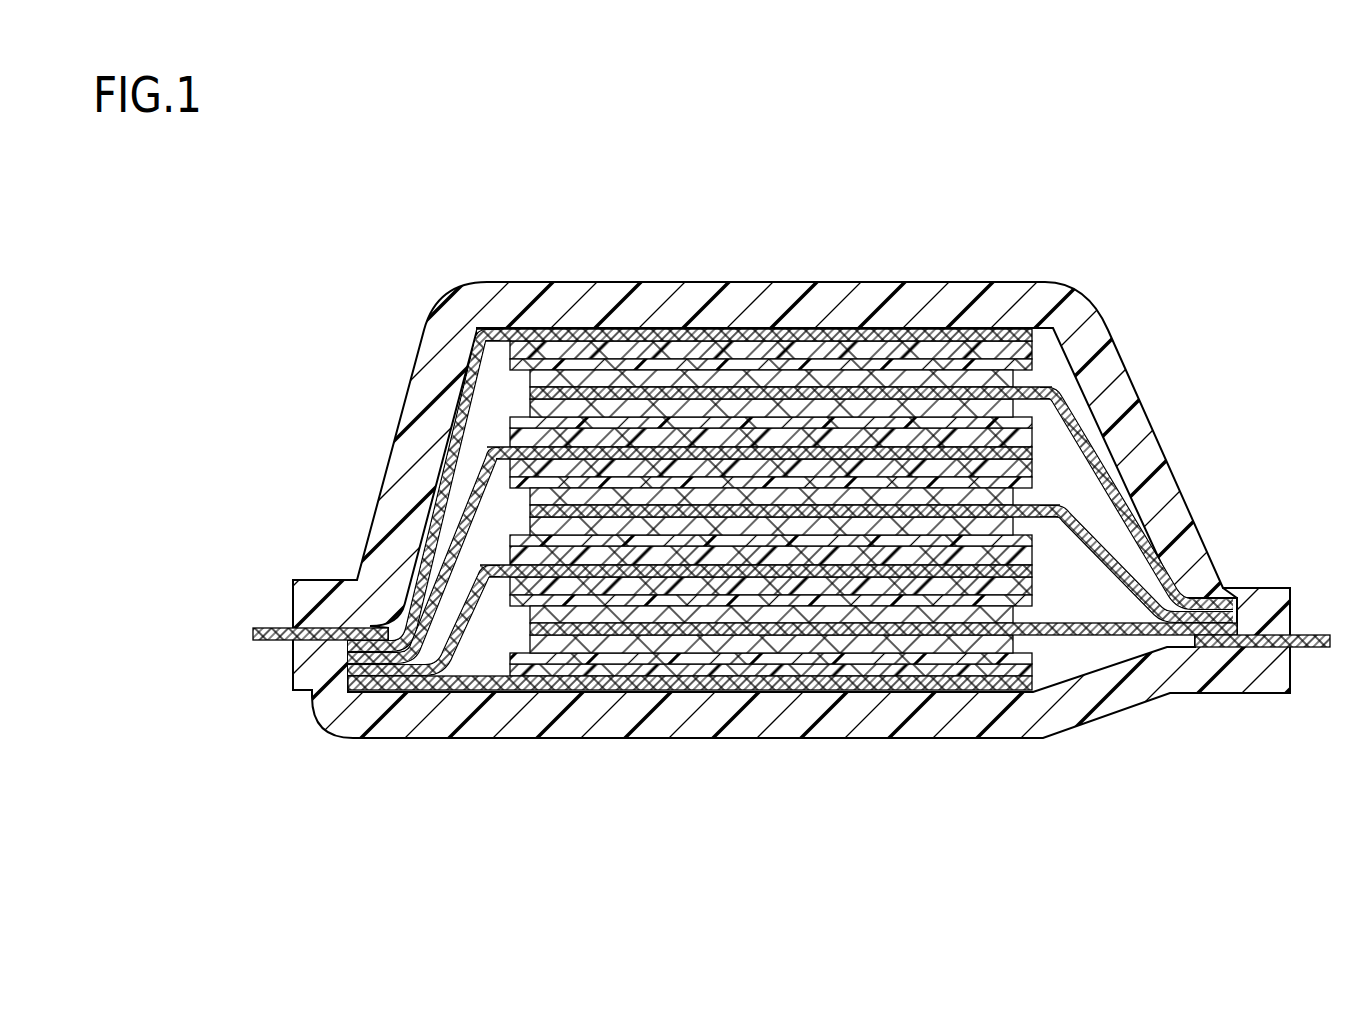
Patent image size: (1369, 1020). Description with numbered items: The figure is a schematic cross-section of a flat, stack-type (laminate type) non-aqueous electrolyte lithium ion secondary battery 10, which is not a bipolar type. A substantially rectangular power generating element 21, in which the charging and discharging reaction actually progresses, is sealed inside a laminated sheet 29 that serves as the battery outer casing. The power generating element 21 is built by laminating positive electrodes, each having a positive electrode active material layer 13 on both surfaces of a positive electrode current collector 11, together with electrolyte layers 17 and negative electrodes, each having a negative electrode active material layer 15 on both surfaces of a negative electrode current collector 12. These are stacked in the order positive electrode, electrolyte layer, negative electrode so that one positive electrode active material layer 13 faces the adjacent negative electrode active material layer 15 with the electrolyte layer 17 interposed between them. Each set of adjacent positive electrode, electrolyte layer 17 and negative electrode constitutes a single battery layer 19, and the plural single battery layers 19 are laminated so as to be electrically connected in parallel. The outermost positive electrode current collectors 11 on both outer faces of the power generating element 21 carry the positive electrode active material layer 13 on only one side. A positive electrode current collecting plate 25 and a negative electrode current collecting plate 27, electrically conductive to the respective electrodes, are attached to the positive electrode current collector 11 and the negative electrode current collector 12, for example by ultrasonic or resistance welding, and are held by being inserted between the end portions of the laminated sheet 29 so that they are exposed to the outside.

The laminate type battery 10 is at (313, 150).
The positive electrode current collector 11 is at (872, 335).
The negative electrode current collector 12 is at (678, 393).
The positive electrode active material layer 13 is at (823, 350).
The negative electrode active material layer 15 is at (728, 378).
The electrolyte layer 17 is at (775, 368).
The single battery layer 19 is at (893, 199).
The power generating element 21 is at (1042, 571).
The positive electrode current collecting plate 25 is at (272, 628).
The negative electrode current collecting plate 27 is at (1312, 635).
The laminated sheet 29 is at (1270, 588).